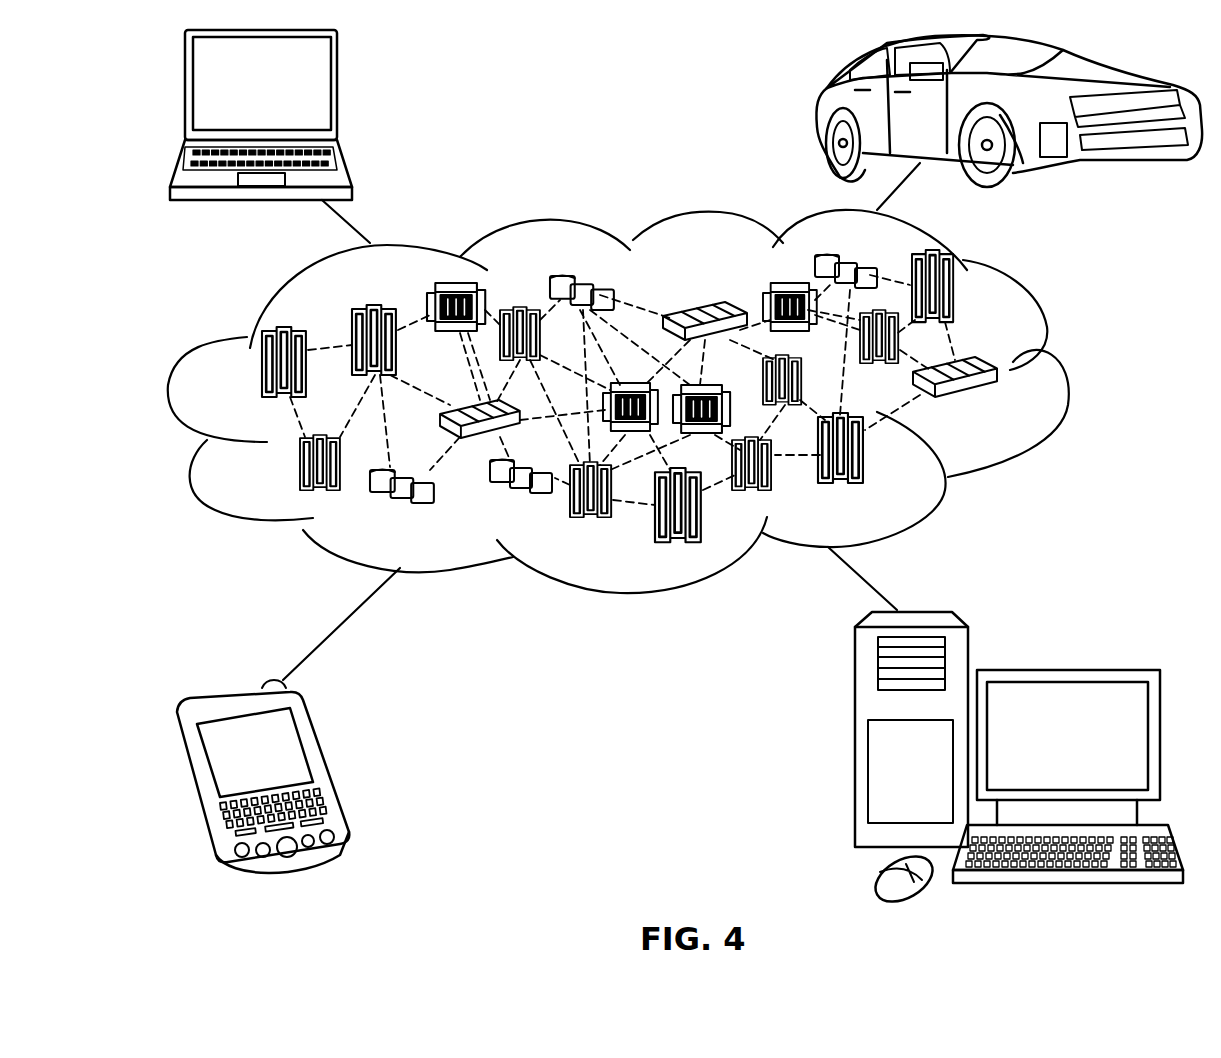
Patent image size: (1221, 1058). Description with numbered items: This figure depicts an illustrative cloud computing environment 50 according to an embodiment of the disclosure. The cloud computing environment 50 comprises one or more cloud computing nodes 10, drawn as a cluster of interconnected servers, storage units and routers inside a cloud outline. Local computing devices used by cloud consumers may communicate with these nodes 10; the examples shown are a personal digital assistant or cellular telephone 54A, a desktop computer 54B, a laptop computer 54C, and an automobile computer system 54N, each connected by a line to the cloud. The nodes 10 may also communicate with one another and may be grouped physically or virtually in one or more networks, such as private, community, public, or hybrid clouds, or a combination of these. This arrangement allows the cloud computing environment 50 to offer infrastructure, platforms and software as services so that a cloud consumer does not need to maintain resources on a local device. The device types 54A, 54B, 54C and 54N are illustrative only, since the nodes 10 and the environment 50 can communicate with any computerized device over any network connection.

The cloud computing nodes 10 is at (1008, 409).
The cloud computing environment 50 is at (1060, 373).
The personal digital assistant or cellular telephone 54A is at (325, 767).
The desktop computer 54B is at (1063, 668).
The laptop computer 54C is at (345, 90).
The automobile computer system 54N is at (820, 110).